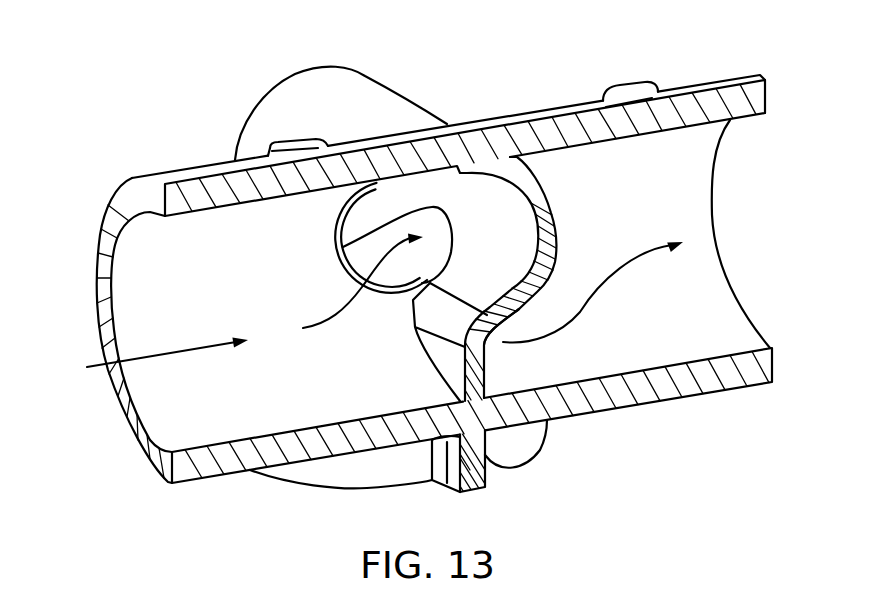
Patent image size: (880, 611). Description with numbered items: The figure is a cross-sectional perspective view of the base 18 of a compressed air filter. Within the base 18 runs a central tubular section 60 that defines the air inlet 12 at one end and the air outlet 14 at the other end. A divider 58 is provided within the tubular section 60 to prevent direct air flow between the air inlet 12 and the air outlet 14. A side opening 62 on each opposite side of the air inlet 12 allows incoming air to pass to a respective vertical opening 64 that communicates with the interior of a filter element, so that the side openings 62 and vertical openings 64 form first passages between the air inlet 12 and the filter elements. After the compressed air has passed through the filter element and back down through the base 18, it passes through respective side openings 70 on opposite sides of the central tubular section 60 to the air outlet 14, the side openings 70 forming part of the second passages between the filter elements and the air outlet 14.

The air inlet 12 is at (99, 313).
The air outlet 14 is at (716, 226).
The base 18 is at (556, 84).
The divider 58 is at (556, 226).
The tubular section 60 is at (483, 121).
The side opening 62 is at (337, 235).
The vertical opening 64 is at (450, 228).
The side opening 70 is at (490, 334).